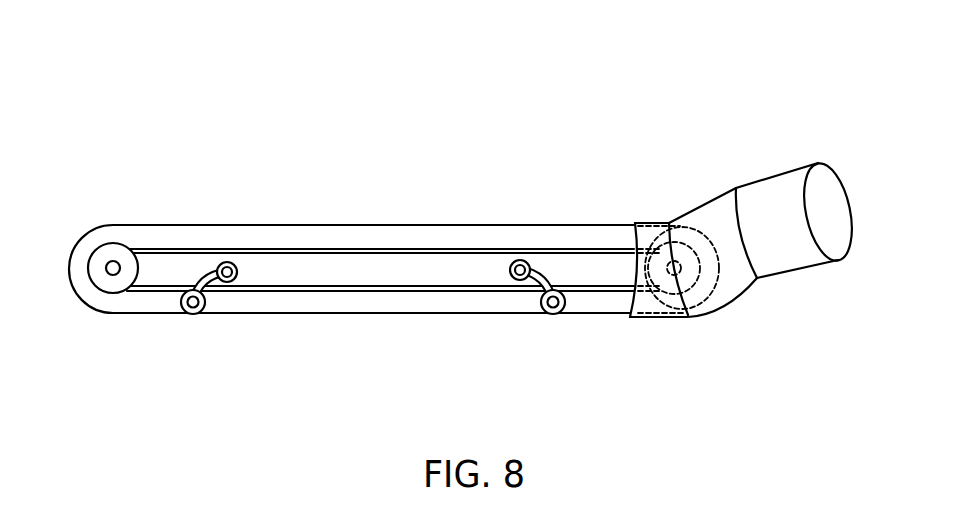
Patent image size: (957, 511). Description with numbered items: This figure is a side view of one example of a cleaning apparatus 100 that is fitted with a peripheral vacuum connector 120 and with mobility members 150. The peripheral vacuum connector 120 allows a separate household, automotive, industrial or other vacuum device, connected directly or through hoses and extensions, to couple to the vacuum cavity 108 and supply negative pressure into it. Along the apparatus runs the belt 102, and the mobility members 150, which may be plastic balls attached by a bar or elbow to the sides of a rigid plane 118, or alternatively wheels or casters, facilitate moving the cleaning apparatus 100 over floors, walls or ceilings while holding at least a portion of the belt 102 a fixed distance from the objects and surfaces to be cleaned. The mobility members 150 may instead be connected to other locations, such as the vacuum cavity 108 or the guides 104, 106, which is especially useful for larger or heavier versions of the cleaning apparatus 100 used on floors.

The cleaning apparatus 100 is at (464, 202).
The belt 102 is at (397, 232).
The guide 104 is at (652, 277).
The guide 106 is at (142, 263).
The vacuum cavity 108 is at (713, 220).
The rigid plane 118 is at (363, 270).
The peripheral vacuum connector 120 is at (767, 190).
The mobility members 150 is at (186, 305).